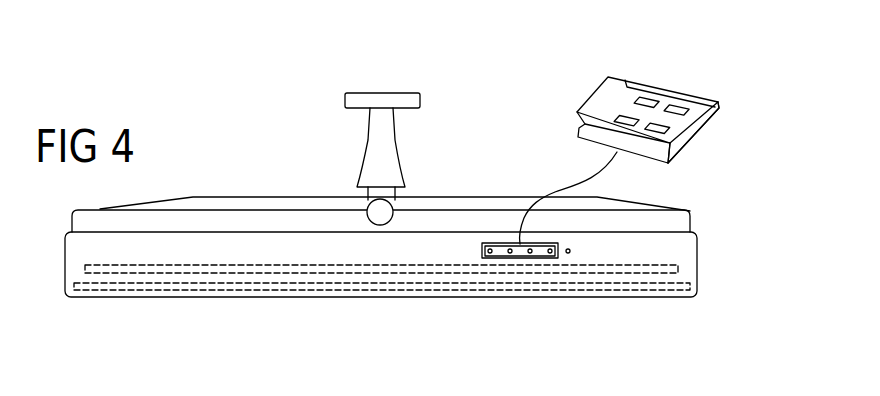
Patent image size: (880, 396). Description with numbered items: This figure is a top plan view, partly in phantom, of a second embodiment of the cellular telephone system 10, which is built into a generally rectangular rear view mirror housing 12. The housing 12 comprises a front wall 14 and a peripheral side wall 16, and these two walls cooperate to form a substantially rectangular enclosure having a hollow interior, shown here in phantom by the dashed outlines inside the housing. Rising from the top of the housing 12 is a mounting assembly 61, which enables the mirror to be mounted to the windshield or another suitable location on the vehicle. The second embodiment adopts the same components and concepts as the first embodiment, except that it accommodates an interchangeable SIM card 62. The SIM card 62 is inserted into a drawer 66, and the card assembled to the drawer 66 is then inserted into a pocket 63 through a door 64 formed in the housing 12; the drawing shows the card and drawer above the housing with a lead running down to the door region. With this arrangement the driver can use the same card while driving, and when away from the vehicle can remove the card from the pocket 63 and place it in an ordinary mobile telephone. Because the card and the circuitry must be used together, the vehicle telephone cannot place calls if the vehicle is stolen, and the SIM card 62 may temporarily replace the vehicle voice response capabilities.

The cellular telephone system 10 is at (464, 106).
The rear view mirror housing 12 is at (695, 298).
The front wall 14 is at (446, 197).
The peripheral side wall 16 is at (65, 263).
The mounting assembly 61 is at (362, 93).
The SIM card 62 is at (590, 92).
The pocket 63 is at (535, 257).
The door 64 is at (499, 257).
The drawer 66 is at (695, 135).